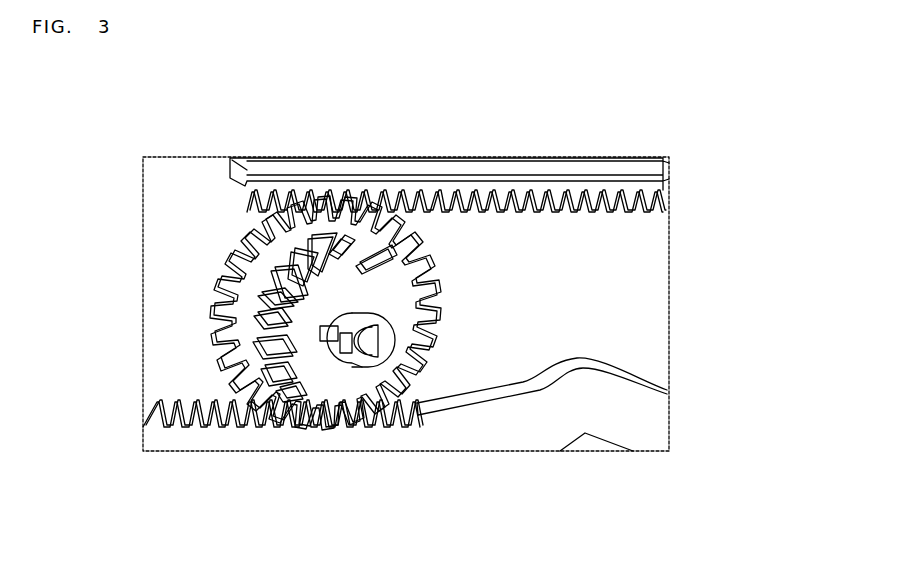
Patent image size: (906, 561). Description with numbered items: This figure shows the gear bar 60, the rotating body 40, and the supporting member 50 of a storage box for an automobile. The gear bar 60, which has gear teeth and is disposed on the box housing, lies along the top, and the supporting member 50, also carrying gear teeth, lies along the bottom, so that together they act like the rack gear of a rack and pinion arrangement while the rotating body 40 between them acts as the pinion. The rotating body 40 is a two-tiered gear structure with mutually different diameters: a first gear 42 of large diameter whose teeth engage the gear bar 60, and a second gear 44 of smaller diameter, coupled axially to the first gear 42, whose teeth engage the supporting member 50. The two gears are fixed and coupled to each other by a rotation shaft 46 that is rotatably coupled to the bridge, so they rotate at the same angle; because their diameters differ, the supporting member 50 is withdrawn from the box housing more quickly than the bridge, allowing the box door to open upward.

The rotating body 40 is at (78, 263).
The first gear 42 is at (260, 283).
The second gear 44 is at (303, 340).
The rotation shaft 46 is at (373, 313).
The supporting member 50 is at (487, 430).
The gear bar 60 is at (477, 188).